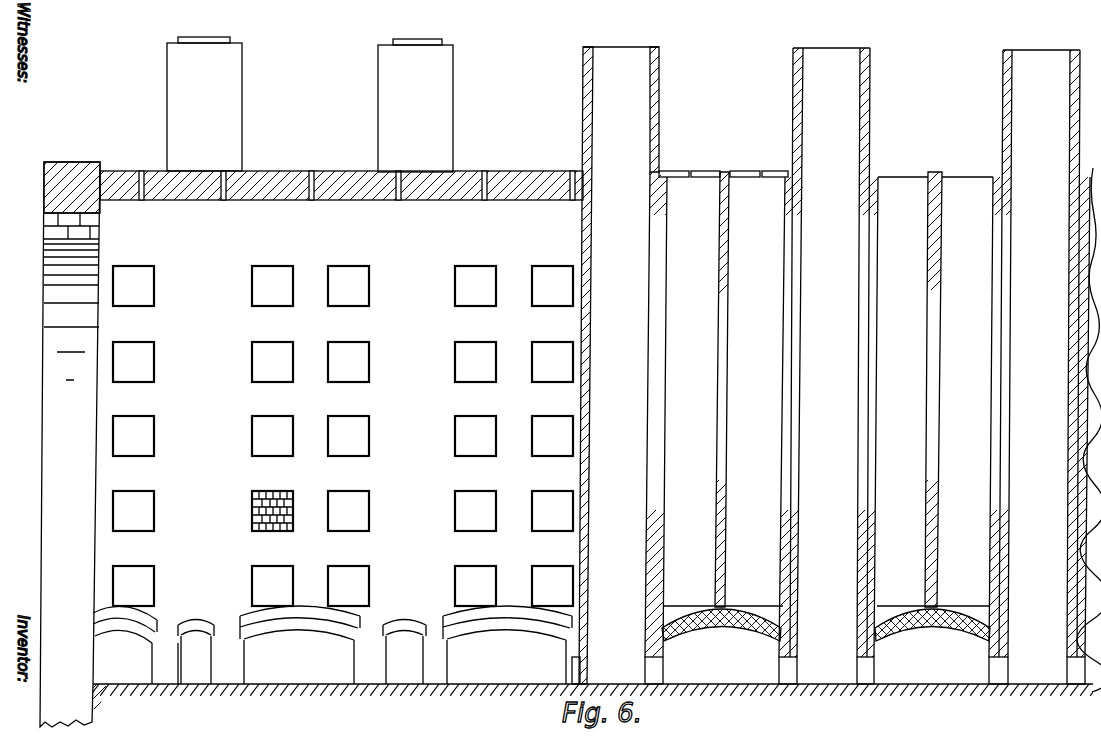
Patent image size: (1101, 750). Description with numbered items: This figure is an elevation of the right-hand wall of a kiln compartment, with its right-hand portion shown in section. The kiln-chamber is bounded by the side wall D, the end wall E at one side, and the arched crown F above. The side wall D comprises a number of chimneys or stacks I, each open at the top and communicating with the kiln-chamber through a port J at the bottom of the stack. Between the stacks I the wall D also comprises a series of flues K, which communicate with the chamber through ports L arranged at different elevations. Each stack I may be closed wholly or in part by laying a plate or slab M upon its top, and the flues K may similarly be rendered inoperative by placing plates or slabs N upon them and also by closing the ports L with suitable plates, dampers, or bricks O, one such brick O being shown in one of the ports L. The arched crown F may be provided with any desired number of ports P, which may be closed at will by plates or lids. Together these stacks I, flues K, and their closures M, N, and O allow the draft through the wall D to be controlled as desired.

The end wall E is at (57, 444).
The arched crown F is at (292, 164).
The port P is at (141, 171).
The plate or slab M is at (200, 34).
The side wall D is at (194, 408).
The port L is at (340, 422).
The plate, damper, or brick O is at (251, 512).
The port J is at (593, 651).
The chimney or stack I is at (840, 369).
The flue K is at (827, 428).
The plate or slab N is at (690, 171).